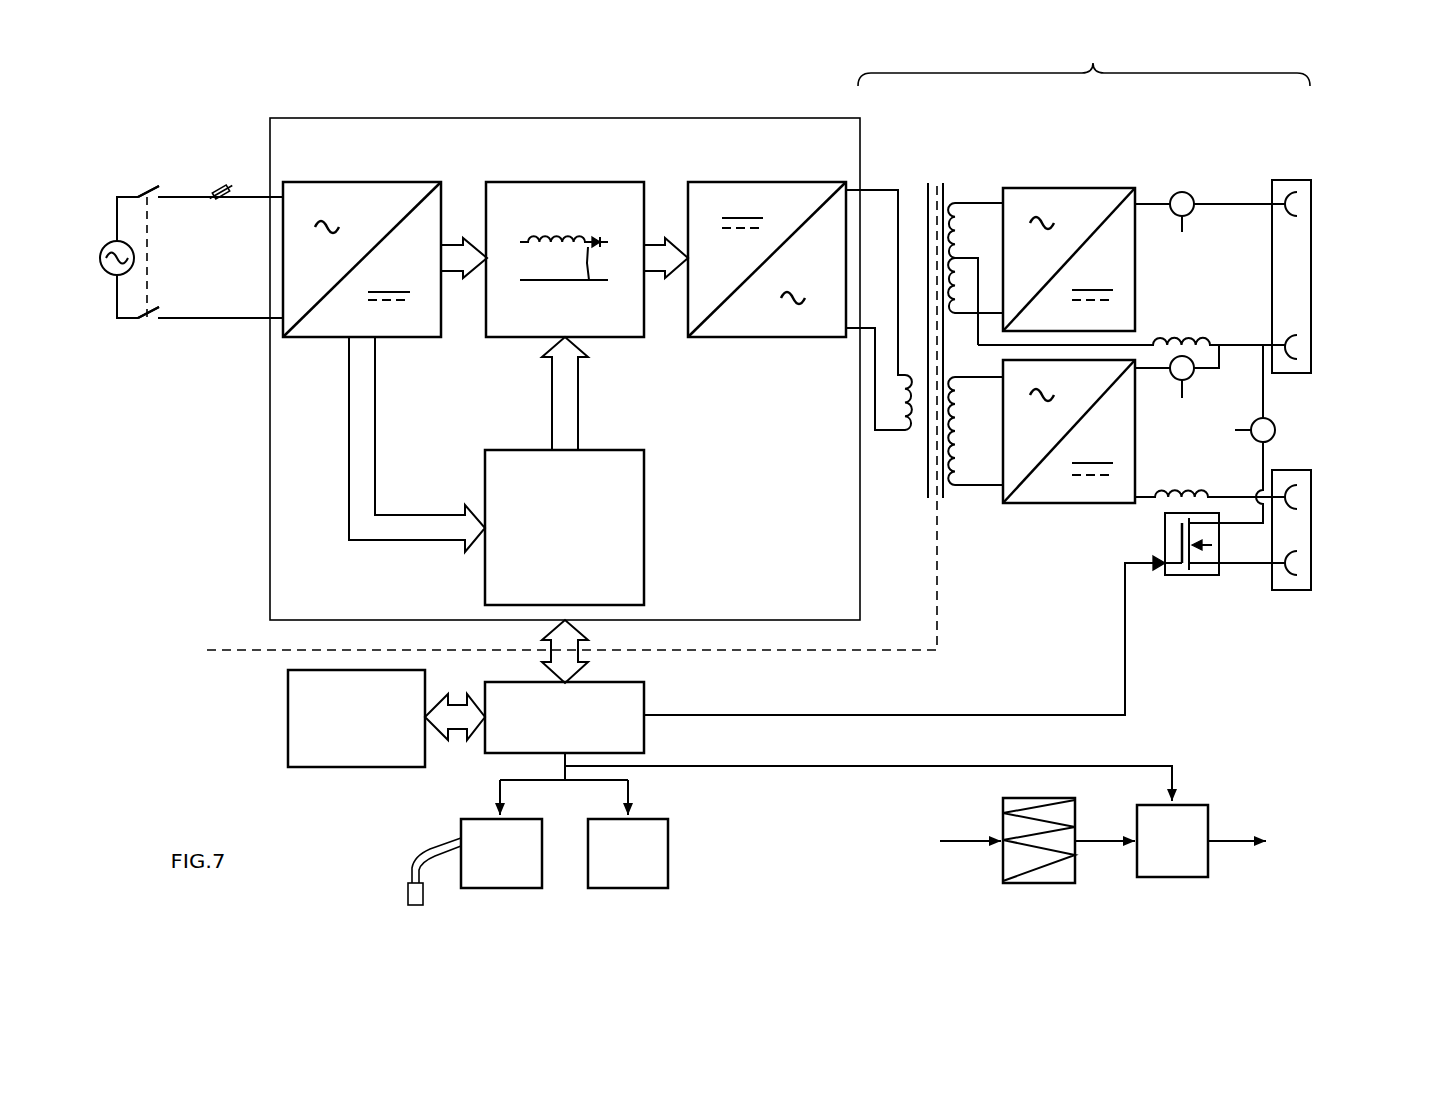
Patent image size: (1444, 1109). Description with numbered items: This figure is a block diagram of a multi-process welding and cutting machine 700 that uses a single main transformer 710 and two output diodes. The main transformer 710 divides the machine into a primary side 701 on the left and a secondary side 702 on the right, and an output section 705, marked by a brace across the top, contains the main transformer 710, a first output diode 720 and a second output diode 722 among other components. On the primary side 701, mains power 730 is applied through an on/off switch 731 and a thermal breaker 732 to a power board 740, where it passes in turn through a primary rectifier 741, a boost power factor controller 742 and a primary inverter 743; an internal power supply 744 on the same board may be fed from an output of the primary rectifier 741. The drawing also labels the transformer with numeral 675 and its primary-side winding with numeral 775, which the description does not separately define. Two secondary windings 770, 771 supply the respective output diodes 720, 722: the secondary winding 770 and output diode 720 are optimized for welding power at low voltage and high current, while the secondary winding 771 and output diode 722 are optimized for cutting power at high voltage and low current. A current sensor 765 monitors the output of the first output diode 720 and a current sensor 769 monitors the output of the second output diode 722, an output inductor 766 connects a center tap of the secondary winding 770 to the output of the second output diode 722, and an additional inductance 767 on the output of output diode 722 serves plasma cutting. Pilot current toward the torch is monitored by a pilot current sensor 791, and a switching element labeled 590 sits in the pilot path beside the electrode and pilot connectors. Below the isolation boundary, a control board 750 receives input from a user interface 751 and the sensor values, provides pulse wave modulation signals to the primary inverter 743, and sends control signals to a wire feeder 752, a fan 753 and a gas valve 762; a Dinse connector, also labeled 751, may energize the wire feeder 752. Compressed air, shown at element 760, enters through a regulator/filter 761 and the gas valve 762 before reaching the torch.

The machine 700 is at (783, 852).
The primary side 701 is at (538, 352).
The secondary side 702 is at (1195, 352).
The output section 705 is at (1131, 327).
The main transformer 710 is at (926, 300).
The main transformer core 675 is at (919, 201).
The first output diode 720 is at (1000, 252).
The second output diode 722 is at (1000, 428).
The mains power 730 is at (103, 271).
The on/off switch 731 is at (152, 122).
The thermal breaker 732 is at (213, 122).
The power board 740 is at (268, 568).
The primary rectifier 741 is at (323, 340).
The boost power factor controller (PFC) 742 is at (523, 340).
The primary inverter 743 is at (740, 340).
The internal power supply 744 is at (517, 448).
The control board 750 is at (606, 682).
The user interface 751 is at (332, 770).
The wire feeder 752 is at (476, 890).
The fan 753 is at (640, 892).
The compressed air input 760 is at (960, 842).
The regulator/filter 761 is at (1075, 813).
The gas valve 762 is at (1208, 823).
The current sensor 765 is at (1210, 137).
The output inductor 766 is at (1180, 282).
The additional inductance 767 is at (1208, 489).
The current sensor 769 is at (1215, 407).
The secondary winding 770 is at (950, 200).
The secondary winding 771 is at (950, 488).
The primary winding 775 is at (913, 412).
The pilot current sensor 791 is at (1342, 405).
The IGBT switch 590 is at (1197, 577).